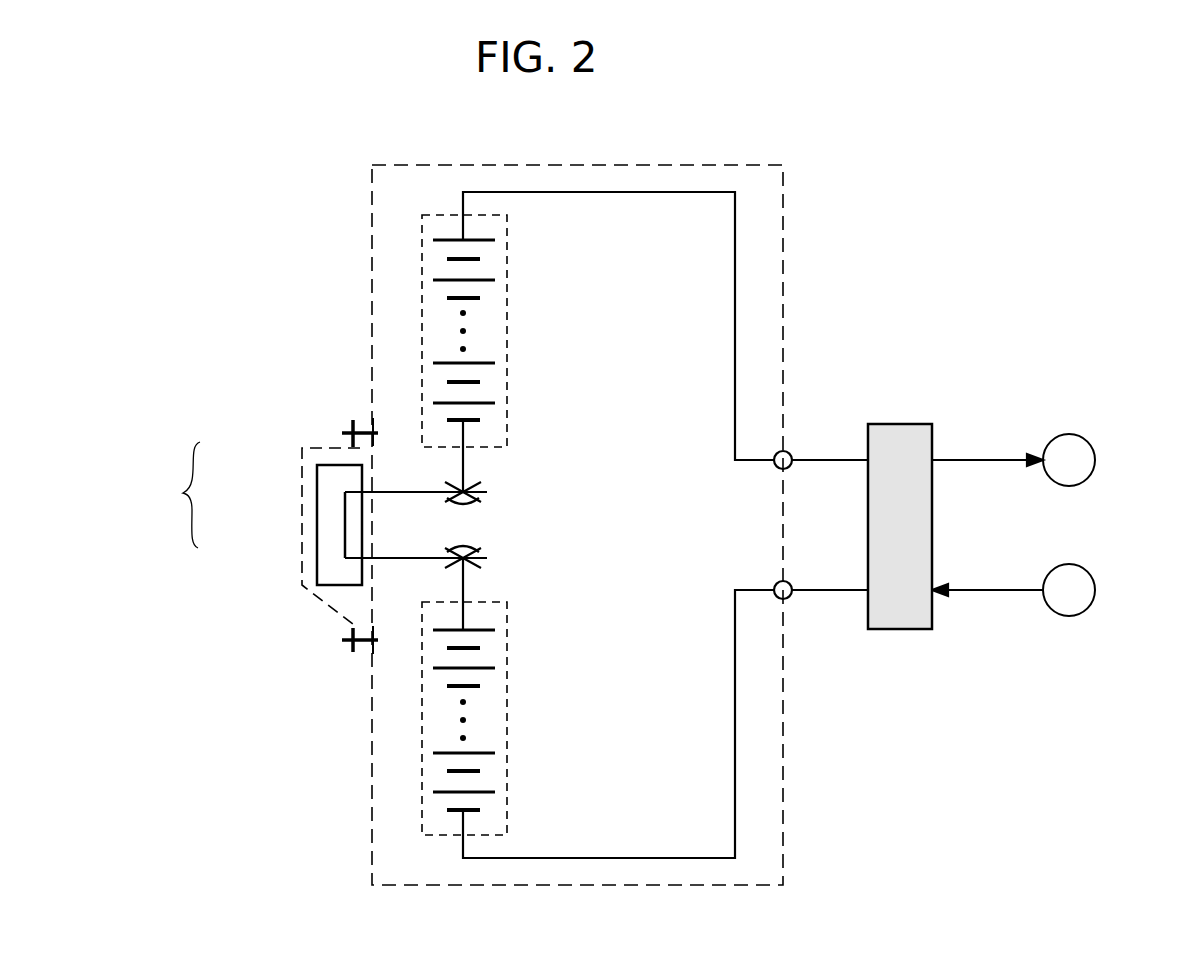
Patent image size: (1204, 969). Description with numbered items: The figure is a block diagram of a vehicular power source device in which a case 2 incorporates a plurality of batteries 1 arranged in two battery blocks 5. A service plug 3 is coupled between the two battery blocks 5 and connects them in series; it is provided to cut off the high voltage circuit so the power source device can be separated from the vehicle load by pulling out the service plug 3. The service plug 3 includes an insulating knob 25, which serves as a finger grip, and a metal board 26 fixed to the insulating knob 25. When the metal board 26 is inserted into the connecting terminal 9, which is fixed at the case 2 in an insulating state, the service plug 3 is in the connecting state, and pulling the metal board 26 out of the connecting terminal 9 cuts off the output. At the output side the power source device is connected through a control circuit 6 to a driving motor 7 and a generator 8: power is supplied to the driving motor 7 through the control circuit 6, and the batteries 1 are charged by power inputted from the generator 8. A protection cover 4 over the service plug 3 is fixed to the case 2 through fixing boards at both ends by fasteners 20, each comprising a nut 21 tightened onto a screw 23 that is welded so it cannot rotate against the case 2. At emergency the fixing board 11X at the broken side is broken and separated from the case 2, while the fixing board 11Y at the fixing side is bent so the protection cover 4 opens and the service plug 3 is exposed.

The battery 1 is at (451, 240).
The case 2 is at (372, 243).
The service plug 3 is at (180, 495).
The protection cover 4 is at (302, 552).
The battery block 5 is at (508, 304).
The control circuit 6 is at (900, 424).
The driving motor 7 is at (1095, 463).
The generator 8 is at (1095, 592).
The connecting terminal 9 is at (480, 484).
The fixing board at the broken side 11X is at (372, 652).
The fixing board at the fixing side 11Y is at (372, 424).
The fastener 20 is at (262, 538).
The nut 21 is at (350, 430).
The screw 23 is at (345, 434).
The insulating knob 25 is at (317, 505).
The metal board 26 is at (398, 491).